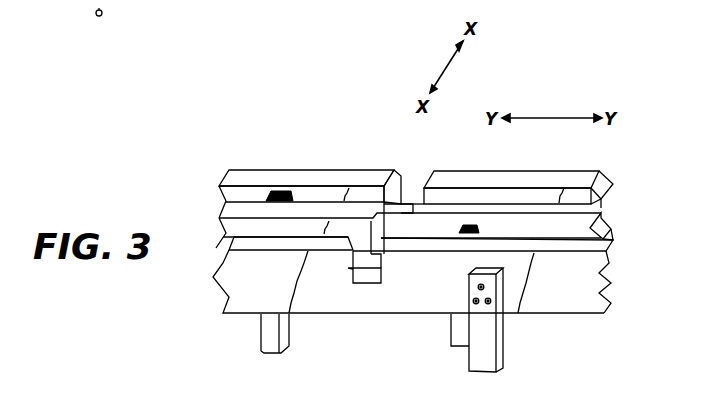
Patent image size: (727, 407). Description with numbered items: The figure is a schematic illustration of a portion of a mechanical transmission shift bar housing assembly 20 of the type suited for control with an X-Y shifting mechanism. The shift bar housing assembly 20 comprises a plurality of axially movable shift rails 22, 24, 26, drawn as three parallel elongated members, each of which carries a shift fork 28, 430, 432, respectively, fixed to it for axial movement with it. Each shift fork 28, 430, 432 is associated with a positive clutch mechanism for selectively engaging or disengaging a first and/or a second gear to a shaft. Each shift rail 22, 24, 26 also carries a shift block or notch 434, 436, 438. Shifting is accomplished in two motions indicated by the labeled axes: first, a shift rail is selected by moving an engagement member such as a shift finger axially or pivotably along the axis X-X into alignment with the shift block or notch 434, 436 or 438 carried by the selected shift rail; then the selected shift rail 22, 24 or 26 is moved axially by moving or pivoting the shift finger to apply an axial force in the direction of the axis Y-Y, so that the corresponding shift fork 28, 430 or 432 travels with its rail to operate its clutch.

The shift bar housing assembly 20 is at (279, 163).
The shift rail 22 is at (503, 176).
The shift rail 24 is at (433, 212).
The shift rail 26 is at (553, 308).
The shift fork 28 is at (267, 333).
The shift fork 430 is at (458, 331).
The shift fork 432 is at (472, 360).
The shift block or notch 434 is at (399, 188).
The shift block or notch 436 is at (382, 184).
The shift block or notch 438 is at (353, 268).